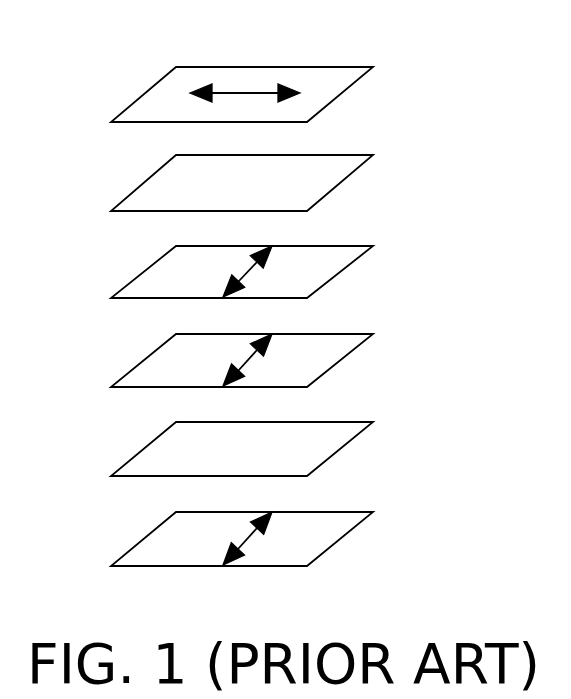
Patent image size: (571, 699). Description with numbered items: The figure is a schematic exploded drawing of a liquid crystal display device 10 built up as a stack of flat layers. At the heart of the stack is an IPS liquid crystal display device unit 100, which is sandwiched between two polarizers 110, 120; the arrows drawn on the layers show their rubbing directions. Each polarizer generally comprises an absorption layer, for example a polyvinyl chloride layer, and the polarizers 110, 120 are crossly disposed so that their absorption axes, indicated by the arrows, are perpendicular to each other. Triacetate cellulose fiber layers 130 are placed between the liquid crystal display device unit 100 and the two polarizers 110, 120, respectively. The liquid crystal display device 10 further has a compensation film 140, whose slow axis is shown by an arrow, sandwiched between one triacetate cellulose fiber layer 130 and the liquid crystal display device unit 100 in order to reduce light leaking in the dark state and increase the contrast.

The liquid crystal display device 10 is at (276, 40).
The IPS liquid crystal display device unit 100 is at (272, 360).
The polarizer 110 is at (272, 539).
The polarizer 120 is at (272, 94).
The triacetate cellulose (TAC) fiber layer 130 is at (272, 315).
The compensation film 140 is at (272, 272).